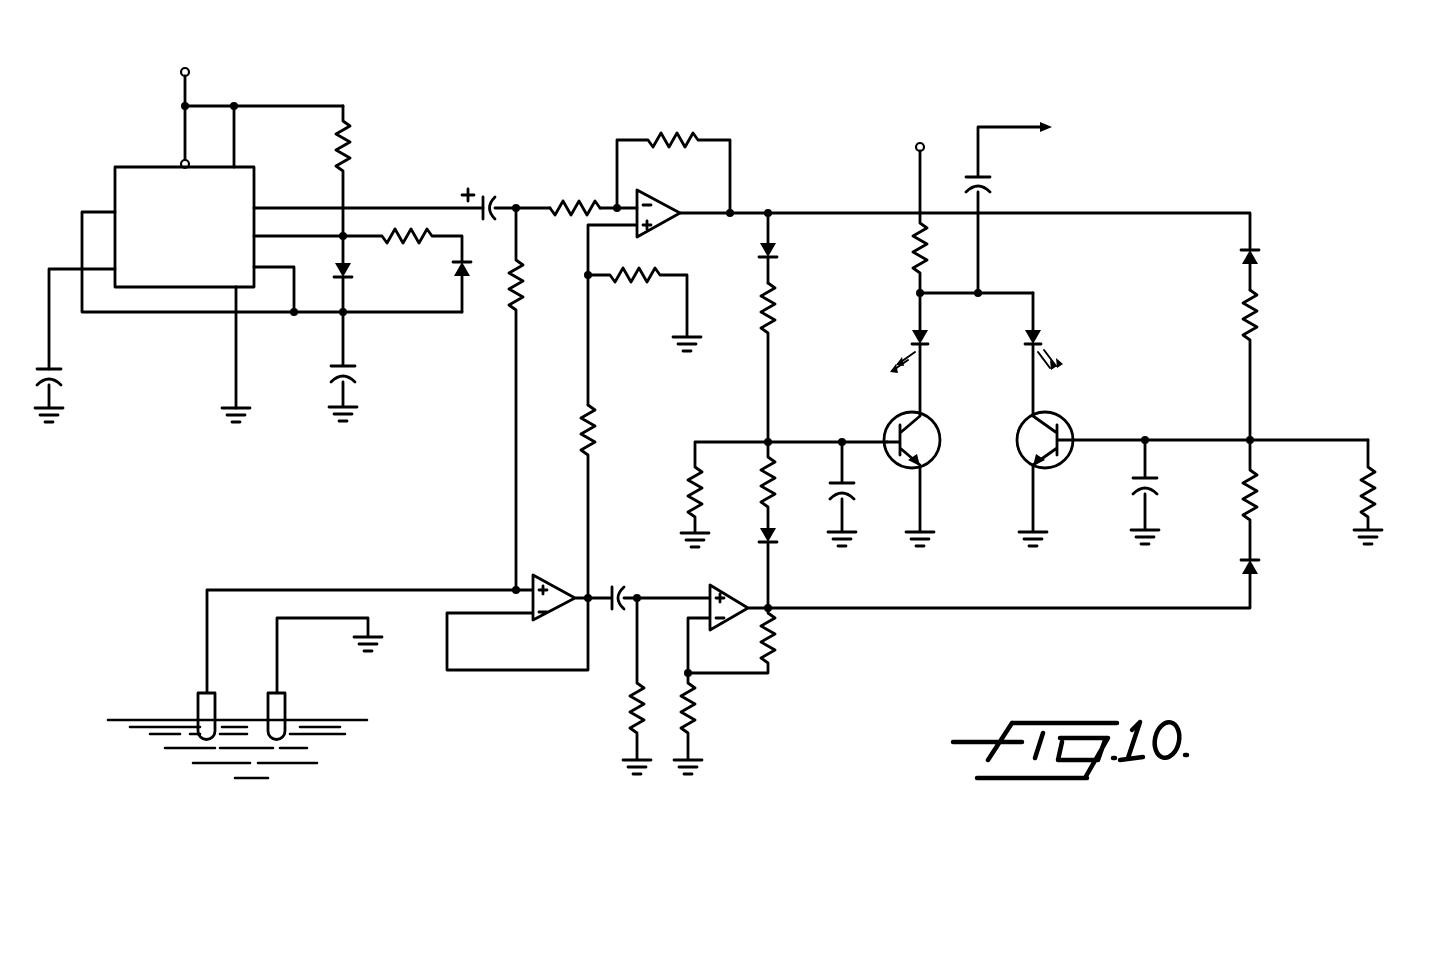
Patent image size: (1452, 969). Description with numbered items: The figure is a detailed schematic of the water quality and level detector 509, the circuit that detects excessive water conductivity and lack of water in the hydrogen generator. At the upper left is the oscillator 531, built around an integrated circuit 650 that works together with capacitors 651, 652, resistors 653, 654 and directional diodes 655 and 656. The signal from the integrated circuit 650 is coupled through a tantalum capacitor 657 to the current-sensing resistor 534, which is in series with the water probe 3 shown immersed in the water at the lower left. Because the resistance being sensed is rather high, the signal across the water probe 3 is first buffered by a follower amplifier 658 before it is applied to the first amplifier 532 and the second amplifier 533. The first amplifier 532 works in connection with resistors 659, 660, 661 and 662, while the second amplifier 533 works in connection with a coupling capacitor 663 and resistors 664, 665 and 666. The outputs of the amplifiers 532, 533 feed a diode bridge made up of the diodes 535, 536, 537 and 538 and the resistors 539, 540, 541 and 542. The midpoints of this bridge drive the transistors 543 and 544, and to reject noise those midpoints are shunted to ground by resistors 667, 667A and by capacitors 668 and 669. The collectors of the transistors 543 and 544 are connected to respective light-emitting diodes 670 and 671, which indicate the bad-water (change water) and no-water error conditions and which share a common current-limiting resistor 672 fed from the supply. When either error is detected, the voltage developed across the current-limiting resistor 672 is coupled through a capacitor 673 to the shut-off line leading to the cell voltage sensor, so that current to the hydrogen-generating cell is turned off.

The water probe 3 is at (172, 703).
The water quality and level detector 509 is at (463, 72).
The oscillator 531 is at (363, 108).
The first amplifier 532 is at (666, 220).
The second amplifier 533 is at (725, 628).
The current-sensing resistor 534 is at (517, 312).
The diode 535 is at (768, 242).
The diode 536 is at (779, 535).
The diode 537 is at (1261, 255).
The diode 538 is at (1262, 565).
The resistor 539 is at (770, 296).
The resistor 540 is at (766, 504).
The resistor 541 is at (1259, 325).
The resistor 542 is at (1257, 474).
The transistor 543 is at (888, 425).
The transistor 544 is at (1077, 410).
The integrated circuit 650 is at (138, 167).
The capacitor 651 is at (62, 364).
The capacitor 652 is at (354, 361).
The resistor 653 is at (350, 139).
The resistor 654 is at (385, 238).
The directional diode 655 is at (352, 278).
The directional diode 656 is at (464, 280).
The tantalum capacitor 657 is at (496, 198).
The follower amplifier 658 is at (565, 618).
The resistor 659 is at (597, 215).
The resistor 660 is at (591, 407).
The resistor 661 is at (696, 140).
The resistor 662 is at (664, 291).
The coupling capacitor 663 is at (607, 590).
The resistor 664 is at (632, 722).
The resistor 665 is at (693, 706).
The resistor 666 is at (778, 640).
The resistor 667 is at (1372, 482).
The resistor 667A is at (688, 470).
The capacitor 668 is at (832, 508).
The capacitor 669 is at (1152, 487).
The light-emitting diode 670 is at (913, 343).
The light-emitting diode 671 is at (1037, 328).
The current-limiting resistor 672 is at (919, 247).
The capacitor 673 is at (991, 177).